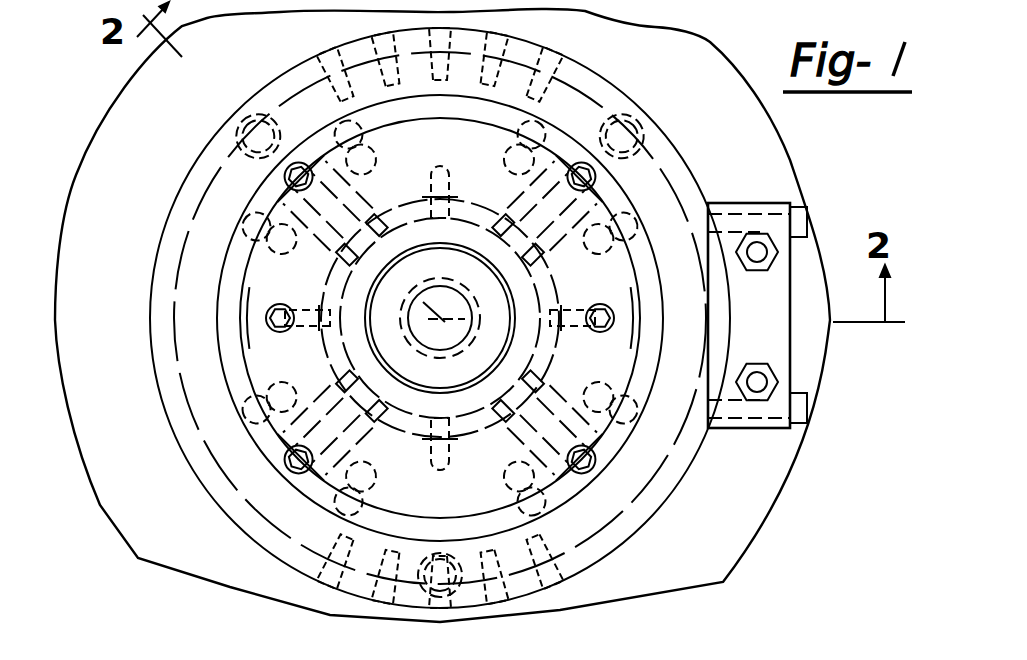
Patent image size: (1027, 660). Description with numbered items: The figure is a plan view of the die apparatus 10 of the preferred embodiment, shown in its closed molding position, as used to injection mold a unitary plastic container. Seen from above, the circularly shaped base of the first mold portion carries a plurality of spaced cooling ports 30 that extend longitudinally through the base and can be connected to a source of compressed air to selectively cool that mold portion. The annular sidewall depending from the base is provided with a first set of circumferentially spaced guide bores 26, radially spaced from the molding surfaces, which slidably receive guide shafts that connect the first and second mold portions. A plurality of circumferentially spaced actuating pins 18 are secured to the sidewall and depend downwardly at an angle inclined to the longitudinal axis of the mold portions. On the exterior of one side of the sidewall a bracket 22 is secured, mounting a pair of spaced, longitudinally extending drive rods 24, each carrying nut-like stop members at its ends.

The motor housing 10 is at (617, 501).
The actuating pins 18 is at (262, 412).
The bracket 22 is at (767, 300).
The drive rods 24 is at (748, 392).
The guide bores 26 is at (403, 643).
The cooling ports 30 is at (553, 45).